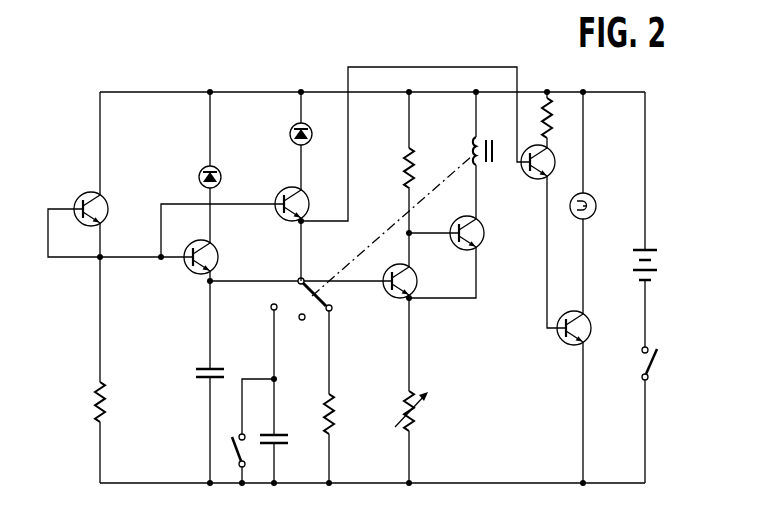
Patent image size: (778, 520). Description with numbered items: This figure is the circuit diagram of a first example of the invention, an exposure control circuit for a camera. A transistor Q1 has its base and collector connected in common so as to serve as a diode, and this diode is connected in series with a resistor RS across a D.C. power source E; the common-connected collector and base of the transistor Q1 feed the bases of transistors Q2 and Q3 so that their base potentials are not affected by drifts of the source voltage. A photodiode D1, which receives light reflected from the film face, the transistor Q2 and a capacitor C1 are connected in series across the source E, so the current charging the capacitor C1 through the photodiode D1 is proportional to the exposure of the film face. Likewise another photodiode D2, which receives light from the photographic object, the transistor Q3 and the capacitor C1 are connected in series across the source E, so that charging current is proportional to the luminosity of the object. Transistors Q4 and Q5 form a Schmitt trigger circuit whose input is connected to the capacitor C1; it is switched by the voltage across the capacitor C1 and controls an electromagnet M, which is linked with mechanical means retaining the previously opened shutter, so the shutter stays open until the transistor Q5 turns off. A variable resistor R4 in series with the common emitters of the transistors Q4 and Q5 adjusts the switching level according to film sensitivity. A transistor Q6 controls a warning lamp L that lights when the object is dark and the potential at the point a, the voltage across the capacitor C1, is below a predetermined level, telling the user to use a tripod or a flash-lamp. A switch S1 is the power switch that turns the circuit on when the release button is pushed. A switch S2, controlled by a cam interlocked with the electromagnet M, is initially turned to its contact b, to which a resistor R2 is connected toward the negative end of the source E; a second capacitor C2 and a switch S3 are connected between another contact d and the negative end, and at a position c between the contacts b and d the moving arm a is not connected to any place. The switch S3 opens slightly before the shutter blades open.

The transistor Q1 is at (89, 224).
The transistor Q2 is at (169, 234).
The transistor Q3 is at (245, 213).
The transistor Q4 is at (410, 265).
The transistor Q5 is at (457, 231).
The transistor Q6 is at (549, 210).
The photodiode D1 is at (221, 140).
The photodiode D2 is at (312, 118).
The electromagnet M is at (483, 143).
The warning lamp L is at (588, 155).
The D.C. power source E is at (651, 265).
The power switch S1 is at (659, 364).
The switch S2 is at (301, 298).
The switch S3 is at (245, 431).
The moving arm a is at (294, 273).
The contact b is at (334, 309).
The position c is at (301, 325).
The contact d is at (269, 308).
The resistor RS is at (87, 402).
The capacitor C1 is at (217, 382).
The second capacitor C2 is at (284, 396).
The resistor R2 is at (341, 397).
The variable resistor R4 is at (416, 390).